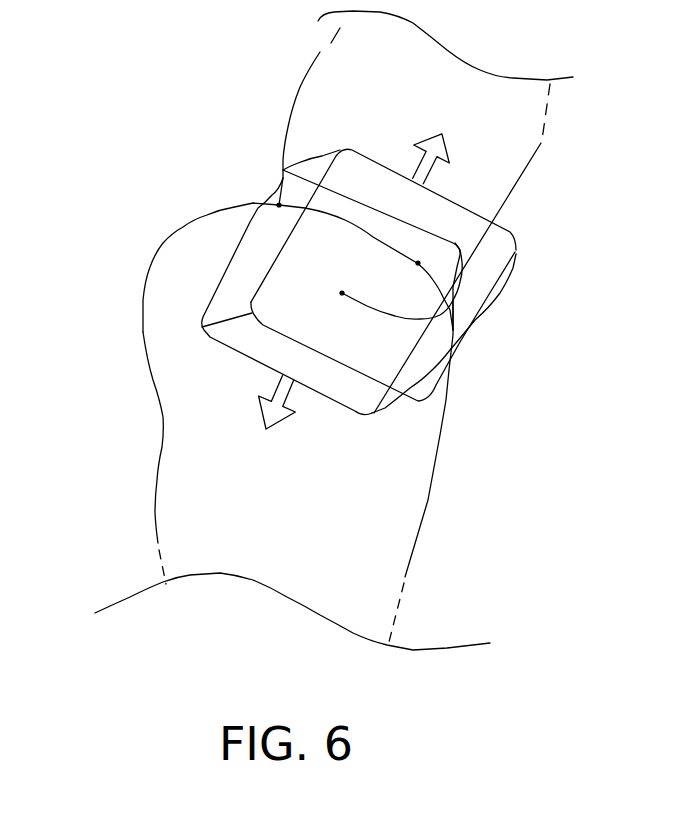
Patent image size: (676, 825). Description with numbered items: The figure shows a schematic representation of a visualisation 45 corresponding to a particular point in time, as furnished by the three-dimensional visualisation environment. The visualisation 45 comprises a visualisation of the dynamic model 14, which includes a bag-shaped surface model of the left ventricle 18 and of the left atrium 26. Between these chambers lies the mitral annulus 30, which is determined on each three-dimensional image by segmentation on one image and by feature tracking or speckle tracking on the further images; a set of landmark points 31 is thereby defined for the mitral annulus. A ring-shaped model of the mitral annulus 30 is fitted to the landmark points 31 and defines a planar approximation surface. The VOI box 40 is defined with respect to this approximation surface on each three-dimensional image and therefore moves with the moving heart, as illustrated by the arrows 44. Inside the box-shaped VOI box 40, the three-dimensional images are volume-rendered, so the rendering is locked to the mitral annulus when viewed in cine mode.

The dynamic model 14 is at (158, 473).
The left ventricle 18 is at (388, 498).
The left atrium 26 is at (497, 137).
The mitral annulus 30 is at (342, 293).
The landmark points 31 is at (279, 205).
The VOI box 40 is at (490, 300).
The arrows 44 is at (440, 133).
The visualisation 45 is at (101, 221).